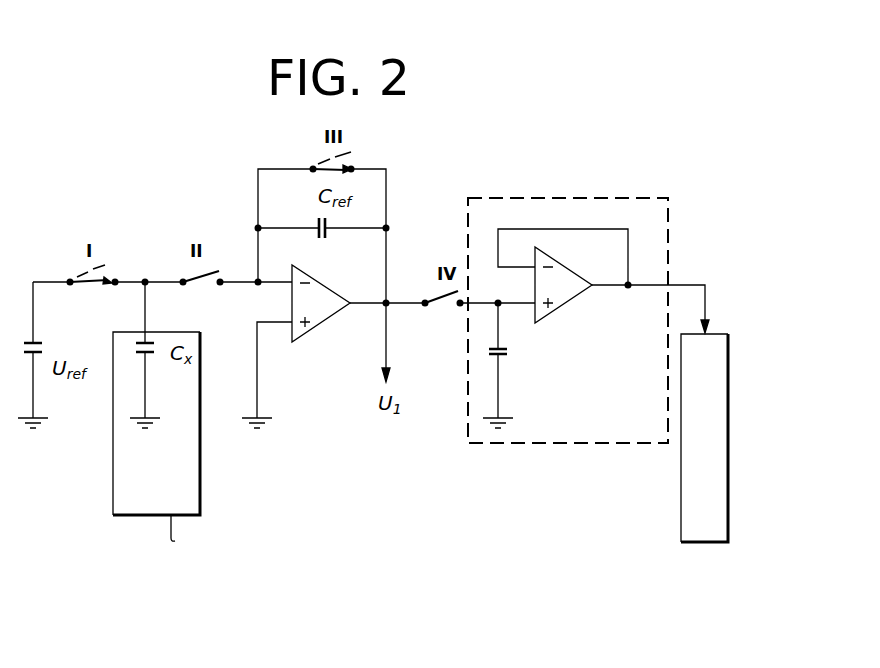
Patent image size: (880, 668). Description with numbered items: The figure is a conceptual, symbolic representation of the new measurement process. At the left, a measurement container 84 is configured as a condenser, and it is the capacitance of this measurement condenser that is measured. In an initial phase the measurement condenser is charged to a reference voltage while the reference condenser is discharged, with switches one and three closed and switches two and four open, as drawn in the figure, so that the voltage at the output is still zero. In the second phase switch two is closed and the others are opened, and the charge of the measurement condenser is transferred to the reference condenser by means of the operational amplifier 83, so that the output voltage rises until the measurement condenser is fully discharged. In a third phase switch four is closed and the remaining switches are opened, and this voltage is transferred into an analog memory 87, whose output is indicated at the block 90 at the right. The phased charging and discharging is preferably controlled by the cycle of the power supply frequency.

The operational amplifier 83 is at (318, 326).
The measurement container 84 is at (193, 468).
The analog memory 87 is at (603, 198).
The output indicator / display 90 is at (681, 504).